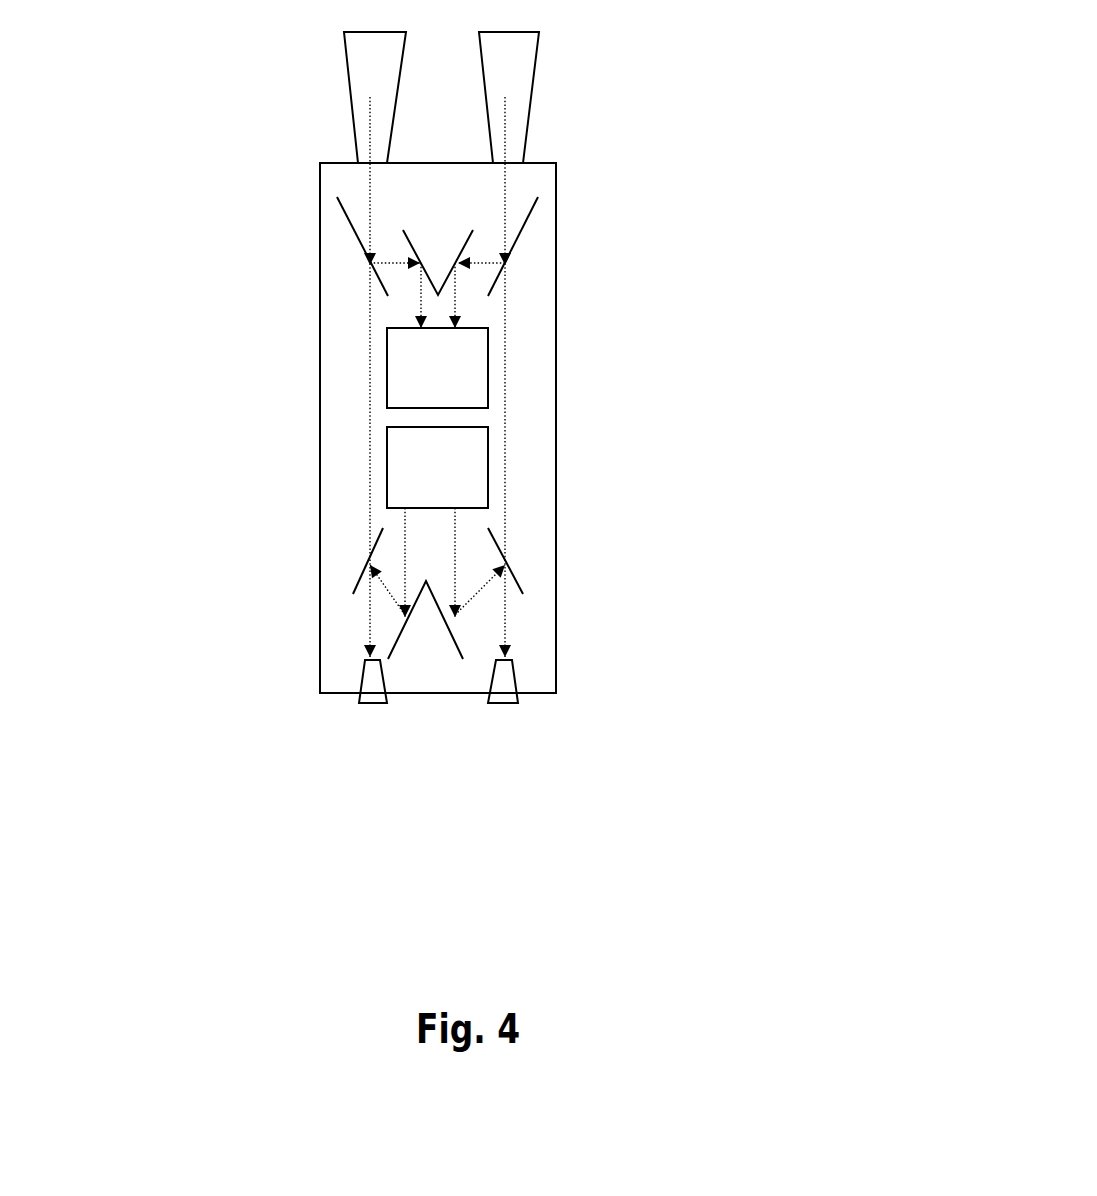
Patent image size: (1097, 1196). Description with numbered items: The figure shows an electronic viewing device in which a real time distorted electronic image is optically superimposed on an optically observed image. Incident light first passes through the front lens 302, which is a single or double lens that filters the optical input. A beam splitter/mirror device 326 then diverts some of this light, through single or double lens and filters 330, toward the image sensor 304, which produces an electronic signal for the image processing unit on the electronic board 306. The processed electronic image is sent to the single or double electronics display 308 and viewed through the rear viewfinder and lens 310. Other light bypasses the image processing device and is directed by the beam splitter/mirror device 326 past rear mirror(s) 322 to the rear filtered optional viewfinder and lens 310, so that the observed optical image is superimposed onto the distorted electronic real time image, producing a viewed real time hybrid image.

The front lens 302 is at (500, 72).
The beam splitter/mirror device 326 is at (362, 247).
The single or double lens, filters 330 is at (487, 338).
The image sensor 304 is at (487, 373).
The electronic board 306 is at (402, 396).
The electronic display 308 is at (388, 470).
The rear mirror(s) 322 is at (542, 570).
The rear viewfinder and rear lens 310 is at (517, 699).